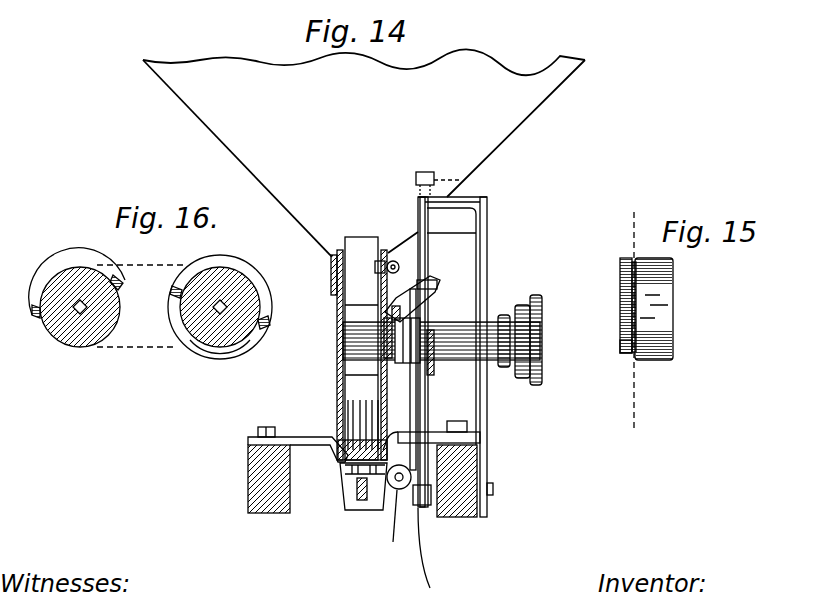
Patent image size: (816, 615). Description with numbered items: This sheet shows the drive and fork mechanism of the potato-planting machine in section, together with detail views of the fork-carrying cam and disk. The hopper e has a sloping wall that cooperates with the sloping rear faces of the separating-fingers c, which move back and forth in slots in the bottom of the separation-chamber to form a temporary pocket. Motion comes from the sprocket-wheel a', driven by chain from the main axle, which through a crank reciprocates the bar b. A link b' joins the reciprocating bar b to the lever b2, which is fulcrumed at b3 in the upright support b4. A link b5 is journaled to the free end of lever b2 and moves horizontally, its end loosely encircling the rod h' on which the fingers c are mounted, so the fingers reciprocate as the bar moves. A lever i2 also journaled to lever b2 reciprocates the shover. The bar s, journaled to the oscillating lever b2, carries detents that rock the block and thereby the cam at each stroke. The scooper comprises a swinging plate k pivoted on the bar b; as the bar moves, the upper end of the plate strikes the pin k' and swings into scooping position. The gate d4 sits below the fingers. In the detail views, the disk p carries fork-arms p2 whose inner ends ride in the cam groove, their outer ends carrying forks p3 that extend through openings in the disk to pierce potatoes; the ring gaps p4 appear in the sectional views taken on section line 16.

In FIG. 14, the hopper e is at (364, 153).
In FIG. 14, the swinging plate k is at (349, 333).
In FIG. 14, the pin k' is at (334, 300).
In FIG. 14, the separating-fingers c is at (347, 420).
In FIG. 14, the bar s is at (434, 392).
In FIG. 14, the sprocket-wheel a' is at (526, 356).
In FIG. 14, the reciprocating bar b is at (437, 352).
In FIG. 14, the upright support b4 is at (486, 248).
In FIG. 14, the fulcrum b3 is at (461, 184).
In FIG. 14, the lever i2 is at (393, 262).
In FIG. 14, the link b' is at (422, 299).
In FIG. 14, the rod h' is at (404, 425).
In FIG. 14, the gate d4 is at (365, 510).
In FIG. 14, the lever b2 is at (424, 508).
In FIG. 14, the link b5 is at (438, 554).
In FIG. 15, the disk p is at (664, 296).
In FIG. 15, the fork-arms p2 is at (625, 262).
In FIG. 16, the fork-arms p2 is at (71, 262).
In FIG. 15, the forks p3 is at (627, 350).
In FIG. 16, the forks p3 is at (213, 360).
In FIG. 15, the ring gap p4 is at (622, 300).
In FIG. 16, the ring gap p4 is at (36, 318).
In FIG. 15, the section line 16 is at (642, 313).